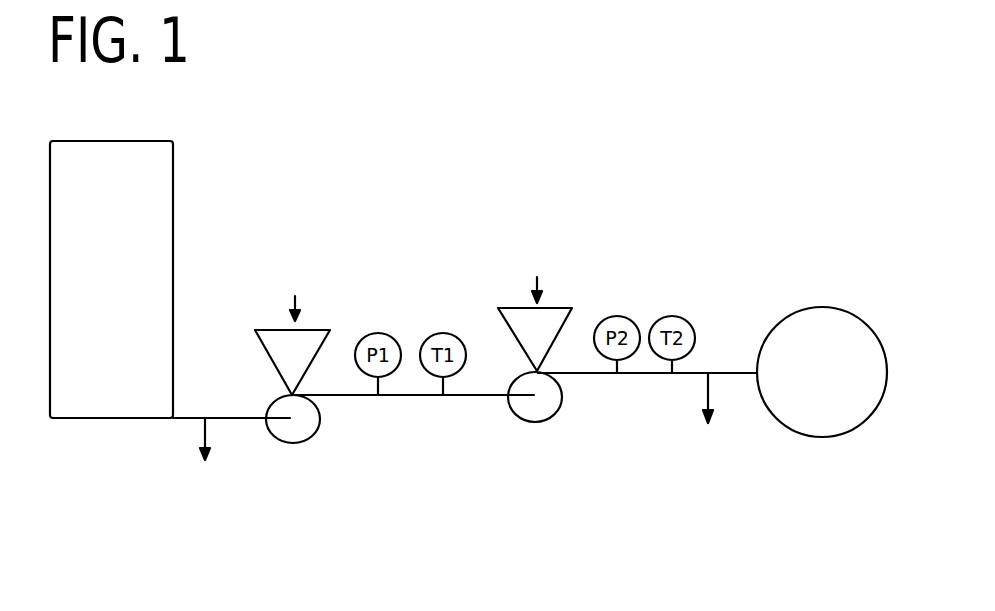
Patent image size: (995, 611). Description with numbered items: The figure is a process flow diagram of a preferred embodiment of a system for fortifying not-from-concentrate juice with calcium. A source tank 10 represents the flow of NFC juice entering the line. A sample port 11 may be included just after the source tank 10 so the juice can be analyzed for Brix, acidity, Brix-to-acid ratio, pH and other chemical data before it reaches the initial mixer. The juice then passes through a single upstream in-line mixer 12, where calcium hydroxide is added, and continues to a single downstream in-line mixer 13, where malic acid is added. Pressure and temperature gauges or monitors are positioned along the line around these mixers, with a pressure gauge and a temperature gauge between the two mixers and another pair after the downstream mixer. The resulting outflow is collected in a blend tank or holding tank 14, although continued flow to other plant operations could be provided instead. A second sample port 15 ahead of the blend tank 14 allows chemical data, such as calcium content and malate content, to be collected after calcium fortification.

The source tank 10 is at (173, 164).
The sample port 11 is at (205, 434).
The upstream in-line mixer 12 is at (284, 352).
The downstream in-line mixer 13 is at (516, 326).
The blend tank 14 is at (850, 320).
The sample port 15 is at (708, 385).